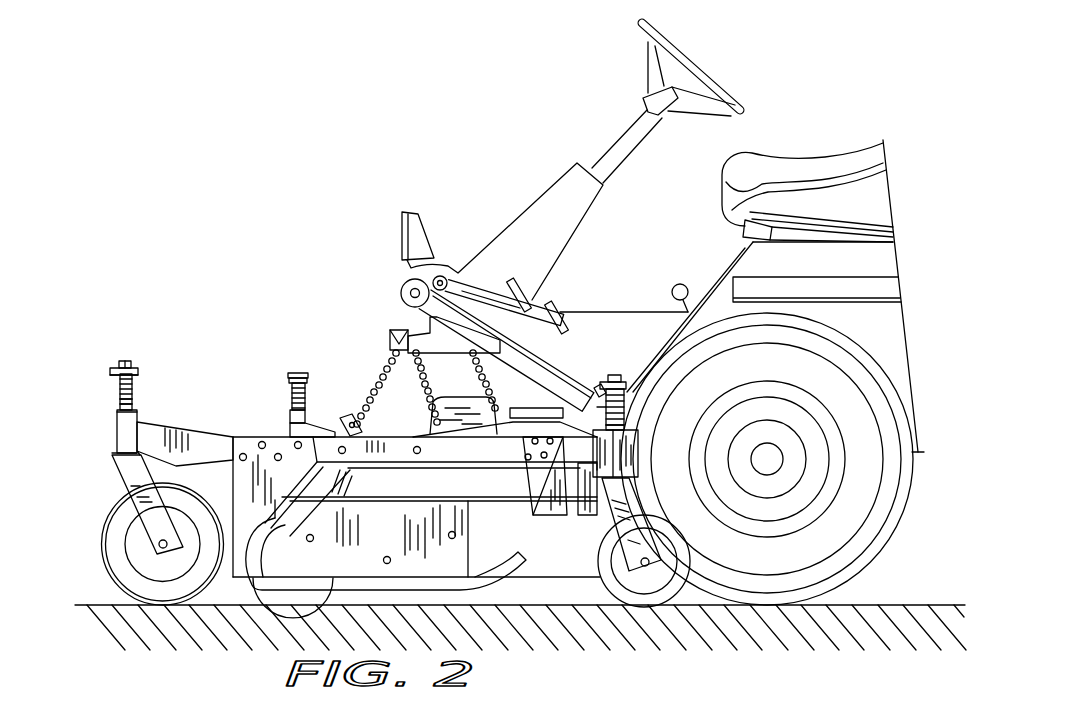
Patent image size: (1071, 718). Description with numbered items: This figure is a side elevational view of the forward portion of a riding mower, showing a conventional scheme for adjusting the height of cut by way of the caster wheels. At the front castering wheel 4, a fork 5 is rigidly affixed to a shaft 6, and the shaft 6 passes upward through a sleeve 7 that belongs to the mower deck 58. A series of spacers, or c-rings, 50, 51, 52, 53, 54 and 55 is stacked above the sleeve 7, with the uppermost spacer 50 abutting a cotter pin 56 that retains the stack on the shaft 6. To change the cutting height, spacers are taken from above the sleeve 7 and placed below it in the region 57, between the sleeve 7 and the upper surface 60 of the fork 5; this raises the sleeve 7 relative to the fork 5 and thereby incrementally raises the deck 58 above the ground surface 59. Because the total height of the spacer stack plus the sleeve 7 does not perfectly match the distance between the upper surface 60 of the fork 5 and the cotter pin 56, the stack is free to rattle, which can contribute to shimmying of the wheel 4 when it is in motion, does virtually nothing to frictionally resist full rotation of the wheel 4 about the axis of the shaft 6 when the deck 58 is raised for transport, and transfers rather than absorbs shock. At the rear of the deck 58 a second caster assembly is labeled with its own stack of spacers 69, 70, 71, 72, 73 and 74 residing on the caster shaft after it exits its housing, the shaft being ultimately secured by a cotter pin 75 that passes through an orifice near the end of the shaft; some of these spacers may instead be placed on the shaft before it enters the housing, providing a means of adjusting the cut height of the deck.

The castering wheel 4 is at (106, 518).
The fork 5 is at (121, 470).
The shaft 6 is at (127, 363).
The sleeve 7 is at (117, 432).
The uppermost spacer 50 is at (138, 376).
The spacer 51 is at (117, 385).
The spacer 52 is at (134, 386).
The spacer 53 is at (118, 398).
The spacer 54 is at (134, 401).
The spacer 55 is at (118, 413).
The cotter pin 56 is at (113, 366).
The region below sleeve 57 is at (116, 455).
The deck 58 is at (275, 436).
The surface 59 is at (100, 604).
The upper surface of fork 60 is at (140, 455).
The spacer 69 is at (605, 406).
The spacer 70 is at (640, 432).
The spacer 71 is at (636, 421).
The spacer 72 is at (640, 404).
The spacer 73 is at (640, 388).
The spacer 74 is at (625, 389).
The cotter pin 75 is at (598, 385).